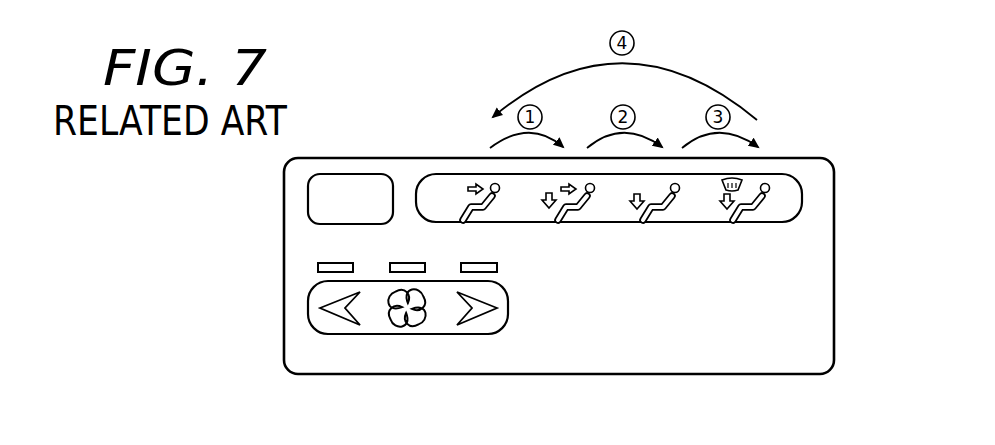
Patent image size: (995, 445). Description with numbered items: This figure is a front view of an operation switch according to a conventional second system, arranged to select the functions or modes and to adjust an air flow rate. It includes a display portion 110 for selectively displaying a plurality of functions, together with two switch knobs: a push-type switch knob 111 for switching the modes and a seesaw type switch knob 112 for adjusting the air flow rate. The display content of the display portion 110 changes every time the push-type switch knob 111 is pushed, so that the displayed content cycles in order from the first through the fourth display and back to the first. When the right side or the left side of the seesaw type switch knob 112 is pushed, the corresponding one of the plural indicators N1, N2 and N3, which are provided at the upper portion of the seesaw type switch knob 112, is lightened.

The display portion 110 is at (834, 195).
The push-type switch knob 111 is at (330, 174).
The seesaw type switch knob 112 is at (340, 334).
The indicator N1 is at (318, 267).
The indicator N2 is at (395, 262).
The indicator N3 is at (497, 265).